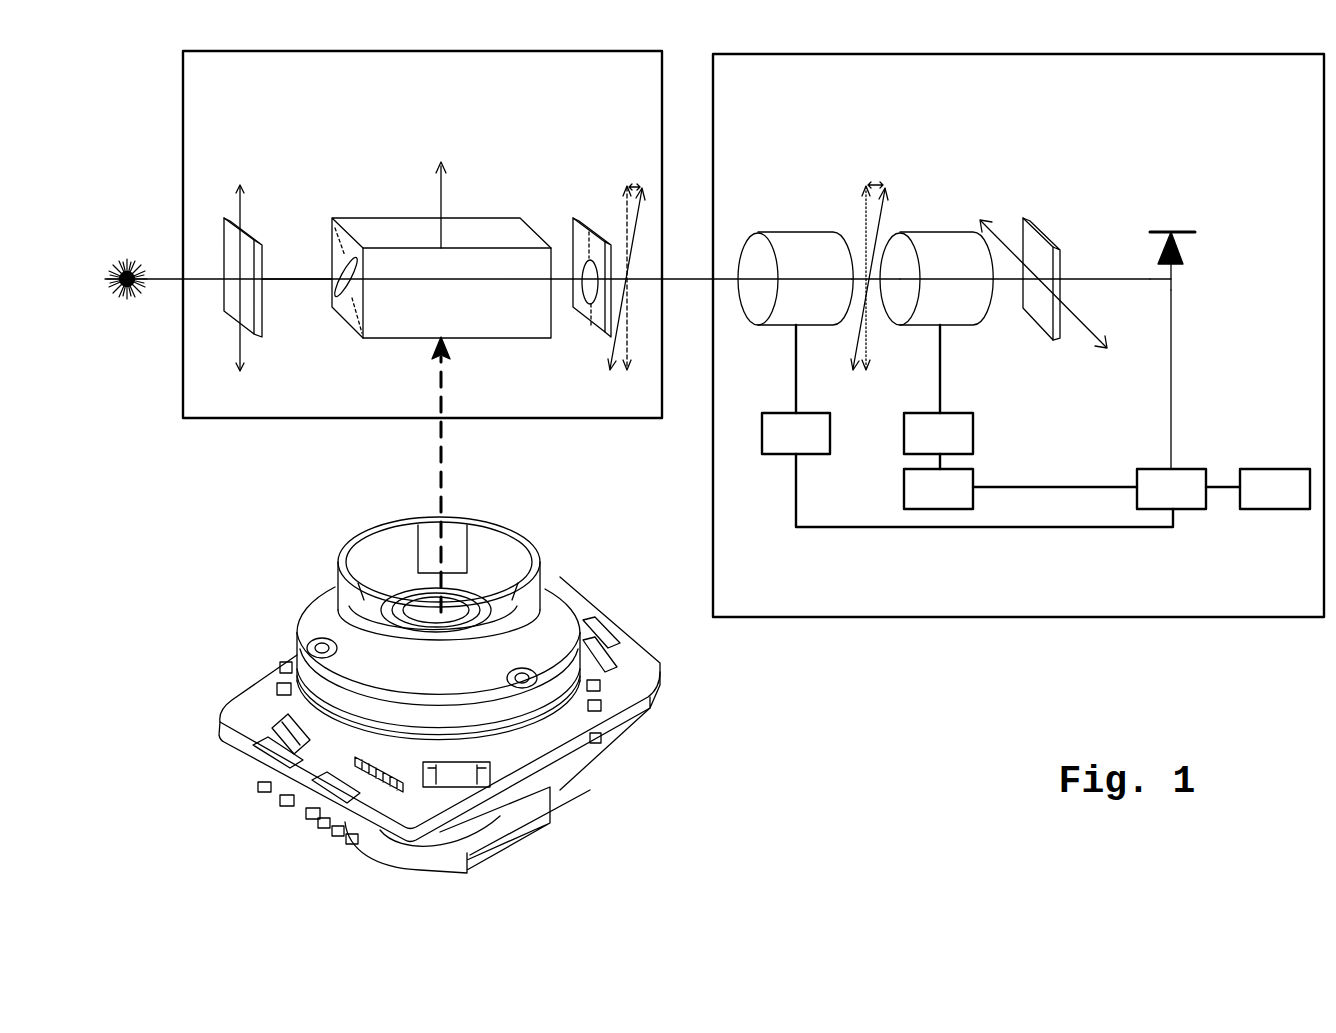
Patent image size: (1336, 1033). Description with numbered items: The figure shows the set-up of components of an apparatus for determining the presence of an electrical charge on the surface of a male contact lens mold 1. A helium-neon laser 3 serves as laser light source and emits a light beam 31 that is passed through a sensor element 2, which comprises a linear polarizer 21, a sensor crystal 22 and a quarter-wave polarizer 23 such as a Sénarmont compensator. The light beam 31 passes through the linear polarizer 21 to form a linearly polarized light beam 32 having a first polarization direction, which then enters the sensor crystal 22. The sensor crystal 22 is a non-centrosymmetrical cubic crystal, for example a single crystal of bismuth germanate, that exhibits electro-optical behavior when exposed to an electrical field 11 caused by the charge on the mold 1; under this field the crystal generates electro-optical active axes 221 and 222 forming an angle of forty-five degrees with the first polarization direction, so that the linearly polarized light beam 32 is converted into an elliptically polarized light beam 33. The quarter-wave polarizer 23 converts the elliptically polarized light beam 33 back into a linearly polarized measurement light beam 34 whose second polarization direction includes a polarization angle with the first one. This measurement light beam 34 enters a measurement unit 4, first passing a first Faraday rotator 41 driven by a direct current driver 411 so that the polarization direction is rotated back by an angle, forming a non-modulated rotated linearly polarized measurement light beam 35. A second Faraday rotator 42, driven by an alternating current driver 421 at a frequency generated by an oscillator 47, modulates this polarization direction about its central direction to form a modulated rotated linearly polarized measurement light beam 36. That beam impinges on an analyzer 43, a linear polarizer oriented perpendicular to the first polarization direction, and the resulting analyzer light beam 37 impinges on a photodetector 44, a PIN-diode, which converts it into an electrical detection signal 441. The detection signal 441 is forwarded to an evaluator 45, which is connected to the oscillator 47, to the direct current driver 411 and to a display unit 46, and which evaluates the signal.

The male contact lens mold 1 is at (600, 726).
The sensor element 2 is at (260, 436).
The helium-neon laser 3 is at (125, 262).
The light beam 31 is at (163, 280).
The electrical field 11 is at (437, 190).
The linear polarizer 21 is at (241, 326).
The linearly polarized light beam 32 is at (274, 281).
The sensor crystal 22 is at (528, 313).
The electro-optical active axis 221 is at (340, 253).
The electro-optical active axis 222 is at (353, 307).
The quarter-wave polarizer 23 is at (578, 237).
The elliptically polarized light beam 33 is at (557, 277).
The linearly polarized measurement light beam 34 is at (687, 280).
The measurement unit 4 is at (1016, 638).
The first Faraday rotator 41 is at (805, 247).
The direct current driver 411 is at (967, 470).
The second Faraday rotator 42 is at (932, 247).
The alternating current driver 421 is at (938, 441).
The non-modulated rotated linearly polarized measurement light beam 35 is at (874, 278).
The modulated rotated linearly polarized measurement light beam 36 is at (1008, 278).
The analyzer 43 is at (1045, 232).
The analyzer light beam 37 is at (1117, 278).
The photodetector 44 is at (1184, 262).
The electrical detection signal 441 is at (1172, 377).
The evaluator 45 is at (1188, 489).
The display unit 46 is at (1275, 489).
The oscillator 47 is at (1020, 489).